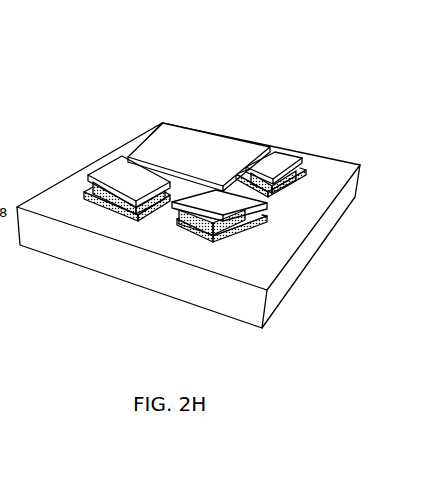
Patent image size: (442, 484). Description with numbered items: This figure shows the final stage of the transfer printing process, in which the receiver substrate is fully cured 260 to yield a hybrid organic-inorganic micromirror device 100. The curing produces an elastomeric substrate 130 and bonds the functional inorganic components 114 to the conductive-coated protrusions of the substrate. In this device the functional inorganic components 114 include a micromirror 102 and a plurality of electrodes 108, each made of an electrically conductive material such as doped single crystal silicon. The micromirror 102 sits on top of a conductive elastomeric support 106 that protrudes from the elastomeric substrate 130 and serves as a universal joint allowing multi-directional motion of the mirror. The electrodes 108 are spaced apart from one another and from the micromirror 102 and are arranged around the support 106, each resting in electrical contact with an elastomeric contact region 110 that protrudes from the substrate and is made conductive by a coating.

The curing step 260 is at (228, 72).
The micromirror device 100 is at (116, 118).
The elastomeric substrate 130 is at (288, 279).
The elastomeric contact region 110 is at (108, 200).
The conductive elastomeric support 106 is at (172, 203).
The electrodes 108 is at (290, 153).
The micromirror 102 is at (249, 144).
The functional inorganic components 114 is at (199, 157).